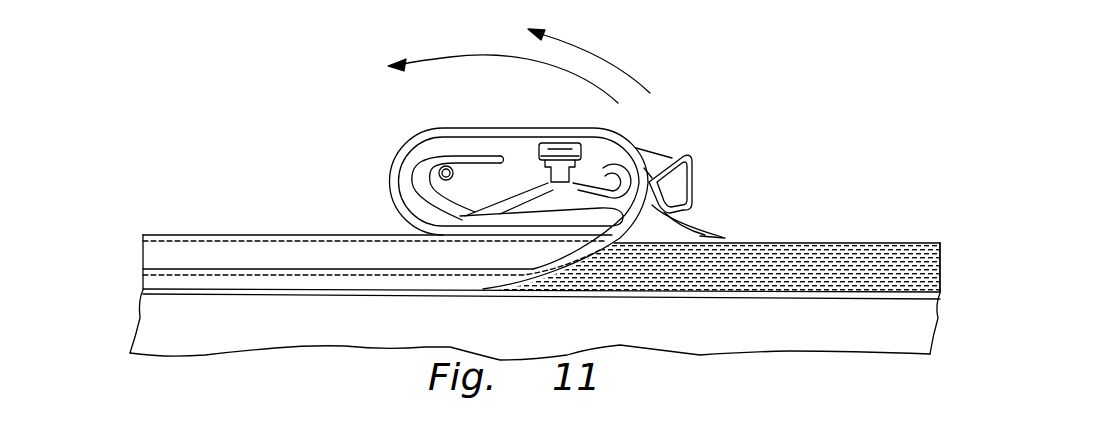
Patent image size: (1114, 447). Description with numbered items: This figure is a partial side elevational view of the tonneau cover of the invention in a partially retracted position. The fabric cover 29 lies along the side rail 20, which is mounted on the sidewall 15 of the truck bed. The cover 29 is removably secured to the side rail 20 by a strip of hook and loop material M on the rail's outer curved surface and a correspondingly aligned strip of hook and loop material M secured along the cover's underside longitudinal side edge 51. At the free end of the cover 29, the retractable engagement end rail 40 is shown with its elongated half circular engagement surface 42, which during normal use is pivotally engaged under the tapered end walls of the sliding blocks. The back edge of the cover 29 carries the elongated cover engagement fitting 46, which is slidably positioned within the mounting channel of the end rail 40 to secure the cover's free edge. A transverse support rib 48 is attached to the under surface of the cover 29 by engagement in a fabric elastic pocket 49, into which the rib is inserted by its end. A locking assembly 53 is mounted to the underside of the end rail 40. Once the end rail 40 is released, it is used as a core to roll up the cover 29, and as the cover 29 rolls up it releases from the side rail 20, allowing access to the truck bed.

The sidewall 15 is at (903, 327).
The side rail 20 is at (942, 269).
The fabric cover 29 is at (287, 255).
The retractable engagement end rail 40 is at (589, 186).
The engagement surface 42 is at (640, 147).
The cover engagement fitting 46 is at (437, 160).
The transverse support rib 48 is at (677, 184).
The fabric elastic pocket 49 is at (680, 217).
The longitudinal side edge 51 is at (858, 277).
The locking assembly 53 is at (563, 143).
The hook and loop material M is at (705, 232).